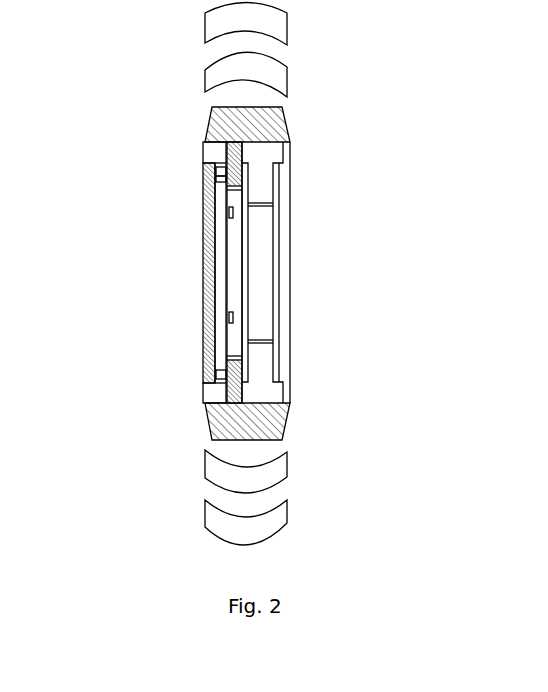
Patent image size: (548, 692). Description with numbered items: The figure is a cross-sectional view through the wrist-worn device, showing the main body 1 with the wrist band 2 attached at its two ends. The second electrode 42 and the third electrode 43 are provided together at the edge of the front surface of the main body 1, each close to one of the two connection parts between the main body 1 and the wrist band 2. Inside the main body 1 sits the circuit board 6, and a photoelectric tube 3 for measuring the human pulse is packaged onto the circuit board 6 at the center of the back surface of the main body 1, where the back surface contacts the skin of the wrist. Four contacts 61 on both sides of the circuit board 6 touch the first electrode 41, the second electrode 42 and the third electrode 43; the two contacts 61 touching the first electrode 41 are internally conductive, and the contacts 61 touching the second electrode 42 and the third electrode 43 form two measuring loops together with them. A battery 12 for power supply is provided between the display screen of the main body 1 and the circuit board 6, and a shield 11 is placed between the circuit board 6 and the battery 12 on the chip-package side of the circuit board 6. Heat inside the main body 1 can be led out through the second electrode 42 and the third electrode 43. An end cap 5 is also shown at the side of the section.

The main body 1 is at (290, 345).
The wrist band 2 is at (207, 69).
The photoelectric tube 3 is at (207, 270).
The end cap 5 is at (207, 150).
The circuit board 6 is at (207, 202).
The shield 11 is at (246, 228).
The battery 12 is at (262, 280).
The first electrode 41 is at (207, 232).
The second electrode 42 is at (284, 131).
The third electrode 43 is at (284, 416).
The contacts 61 is at (224, 172).